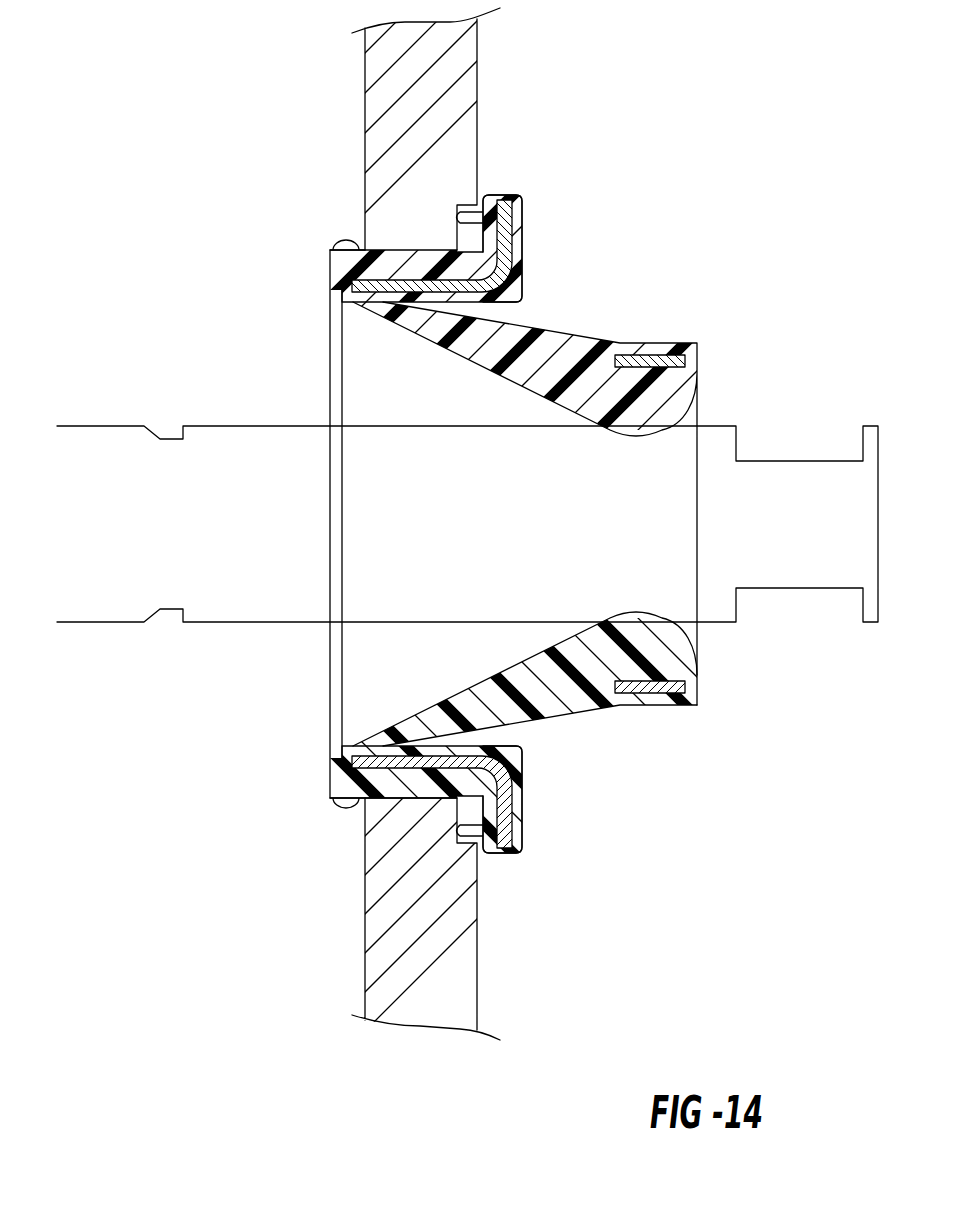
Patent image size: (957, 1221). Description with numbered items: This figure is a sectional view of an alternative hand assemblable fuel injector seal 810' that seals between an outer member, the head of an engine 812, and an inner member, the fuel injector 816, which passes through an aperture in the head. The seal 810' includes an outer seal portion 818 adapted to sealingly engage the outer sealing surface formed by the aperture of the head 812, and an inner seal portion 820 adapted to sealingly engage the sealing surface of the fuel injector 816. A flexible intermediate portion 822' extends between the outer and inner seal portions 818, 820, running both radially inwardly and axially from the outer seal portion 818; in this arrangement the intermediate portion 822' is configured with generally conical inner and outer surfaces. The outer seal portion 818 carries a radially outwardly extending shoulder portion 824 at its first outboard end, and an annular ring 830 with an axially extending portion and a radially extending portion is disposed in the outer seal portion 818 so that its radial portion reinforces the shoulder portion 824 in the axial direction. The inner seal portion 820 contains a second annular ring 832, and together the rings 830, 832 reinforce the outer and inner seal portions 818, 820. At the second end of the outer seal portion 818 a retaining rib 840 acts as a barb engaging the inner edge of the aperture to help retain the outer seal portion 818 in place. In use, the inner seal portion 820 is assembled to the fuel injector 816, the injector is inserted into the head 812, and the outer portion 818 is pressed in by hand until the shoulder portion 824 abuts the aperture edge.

The hand assemblable fuel injector seal 810' is at (523, 518).
The head of an engine 812 is at (387, 950).
The fuel injector 816 is at (796, 474).
The outer seal portion 818 is at (417, 792).
The inner seal portion 820 is at (658, 632).
The flexible intermediate portion 822' is at (523, 447).
The shoulder portion 824 is at (460, 230).
The annular ring 830 is at (390, 764).
The second annular ring 832 is at (668, 697).
The retaining rib 840 is at (345, 237).